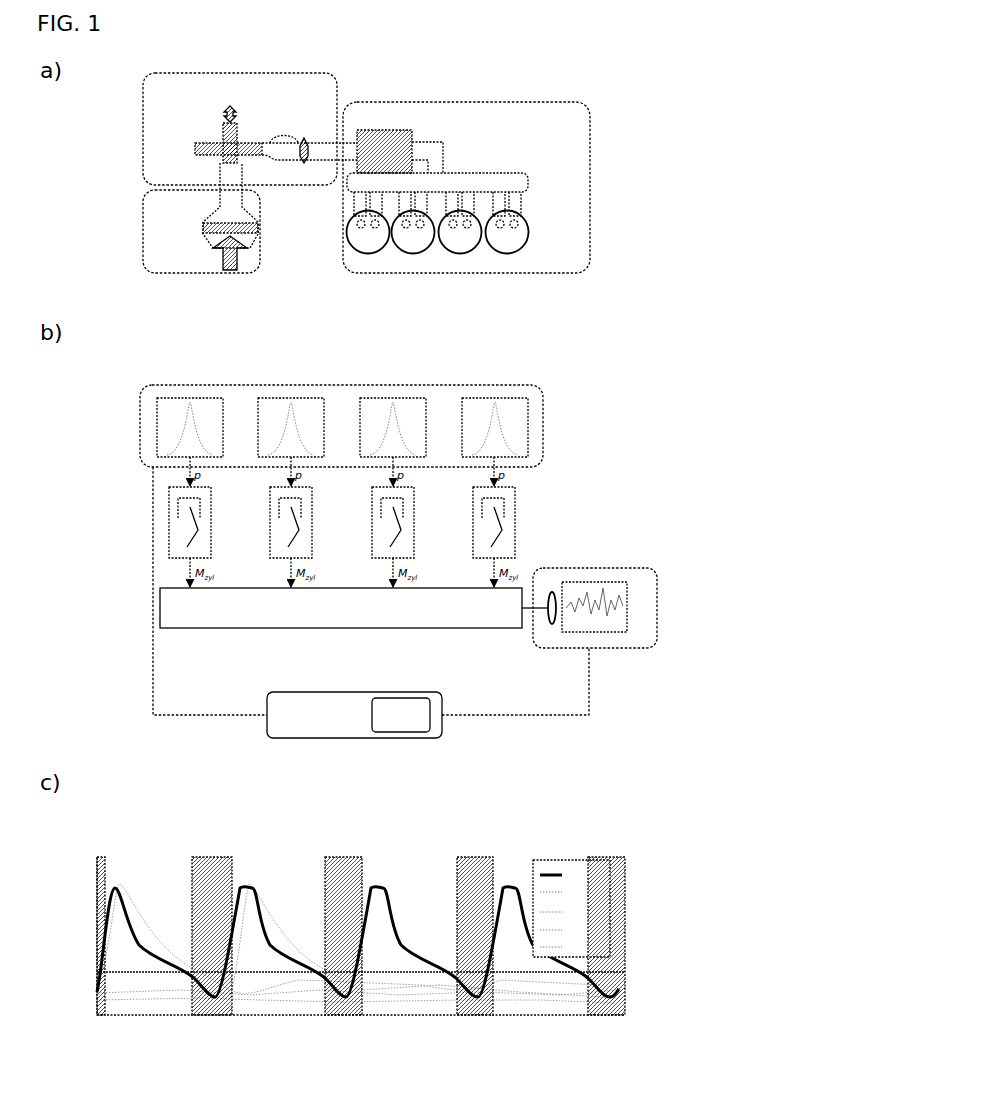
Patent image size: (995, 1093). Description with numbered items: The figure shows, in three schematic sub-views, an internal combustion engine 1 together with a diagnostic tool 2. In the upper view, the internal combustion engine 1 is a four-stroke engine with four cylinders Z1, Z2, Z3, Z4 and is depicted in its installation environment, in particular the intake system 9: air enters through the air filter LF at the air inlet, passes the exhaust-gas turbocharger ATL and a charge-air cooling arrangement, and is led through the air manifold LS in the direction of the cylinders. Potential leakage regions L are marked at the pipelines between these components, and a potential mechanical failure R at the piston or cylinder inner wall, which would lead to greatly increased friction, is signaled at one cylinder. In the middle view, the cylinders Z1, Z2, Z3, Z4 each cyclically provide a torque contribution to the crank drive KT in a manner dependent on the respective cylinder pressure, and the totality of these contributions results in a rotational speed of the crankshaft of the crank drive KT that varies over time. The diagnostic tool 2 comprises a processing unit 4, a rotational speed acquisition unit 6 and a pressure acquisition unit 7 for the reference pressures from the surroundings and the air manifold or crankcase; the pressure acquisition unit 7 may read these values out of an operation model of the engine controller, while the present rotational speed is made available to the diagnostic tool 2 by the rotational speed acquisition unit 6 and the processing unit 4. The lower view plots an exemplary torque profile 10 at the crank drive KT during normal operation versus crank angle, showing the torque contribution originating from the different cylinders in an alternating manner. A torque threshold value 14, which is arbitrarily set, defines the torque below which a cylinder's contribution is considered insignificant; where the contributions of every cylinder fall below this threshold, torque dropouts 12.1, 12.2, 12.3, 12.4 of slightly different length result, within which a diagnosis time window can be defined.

The internal combustion engine 1 is at (547, 182).
The diagnostic tool 2 is at (354, 715).
The processing unit 4 is at (401, 715).
The rotational speed acquisition unit 6 is at (632, 648).
The pressure acquisition unit 7 is at (137, 445).
The intake system 9 is at (397, 75).
The torque profile 10 is at (608, 823).
The torque dropout 12.1 is at (223, 873).
The torque dropout 12.2 is at (342, 873).
The torque dropout 12.3 is at (483, 873).
The torque dropout 12.4 is at (104, 872).
The torque threshold value 14 is at (256, 978).
The exhaust-gas turbocharger ATL is at (218, 131).
The leakage regions L is at (287, 141).
The air manifold LS is at (490, 190).
The air filter LF is at (258, 226).
The mechanical failure R is at (368, 232).
The crank drive KT is at (440, 628).
The cylinder Z1 is at (378, 242).
The cylinder Z2 is at (423, 242).
The cylinder Z3 is at (470, 242).
The cylinder Z4 is at (517, 242).